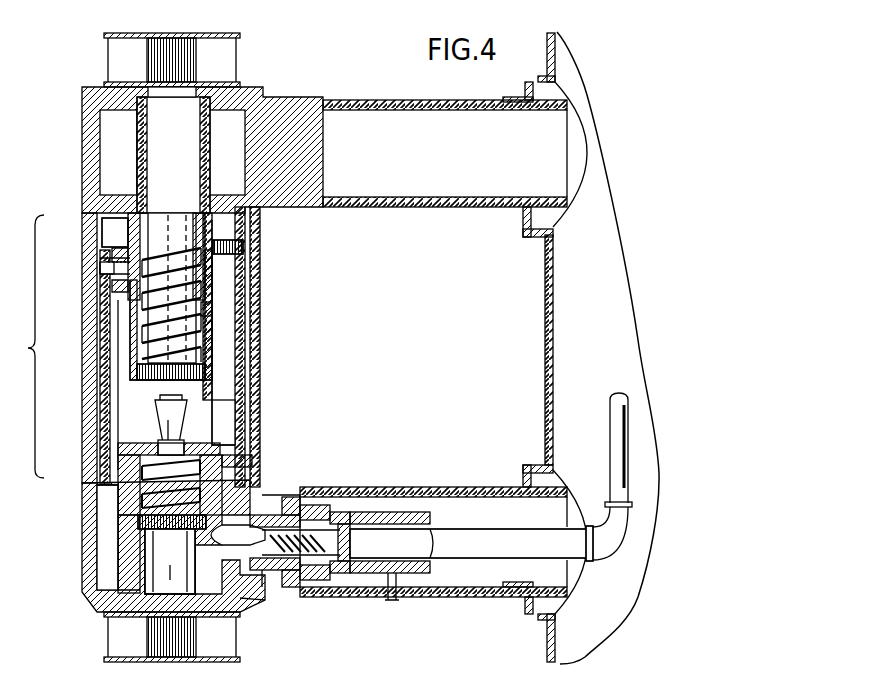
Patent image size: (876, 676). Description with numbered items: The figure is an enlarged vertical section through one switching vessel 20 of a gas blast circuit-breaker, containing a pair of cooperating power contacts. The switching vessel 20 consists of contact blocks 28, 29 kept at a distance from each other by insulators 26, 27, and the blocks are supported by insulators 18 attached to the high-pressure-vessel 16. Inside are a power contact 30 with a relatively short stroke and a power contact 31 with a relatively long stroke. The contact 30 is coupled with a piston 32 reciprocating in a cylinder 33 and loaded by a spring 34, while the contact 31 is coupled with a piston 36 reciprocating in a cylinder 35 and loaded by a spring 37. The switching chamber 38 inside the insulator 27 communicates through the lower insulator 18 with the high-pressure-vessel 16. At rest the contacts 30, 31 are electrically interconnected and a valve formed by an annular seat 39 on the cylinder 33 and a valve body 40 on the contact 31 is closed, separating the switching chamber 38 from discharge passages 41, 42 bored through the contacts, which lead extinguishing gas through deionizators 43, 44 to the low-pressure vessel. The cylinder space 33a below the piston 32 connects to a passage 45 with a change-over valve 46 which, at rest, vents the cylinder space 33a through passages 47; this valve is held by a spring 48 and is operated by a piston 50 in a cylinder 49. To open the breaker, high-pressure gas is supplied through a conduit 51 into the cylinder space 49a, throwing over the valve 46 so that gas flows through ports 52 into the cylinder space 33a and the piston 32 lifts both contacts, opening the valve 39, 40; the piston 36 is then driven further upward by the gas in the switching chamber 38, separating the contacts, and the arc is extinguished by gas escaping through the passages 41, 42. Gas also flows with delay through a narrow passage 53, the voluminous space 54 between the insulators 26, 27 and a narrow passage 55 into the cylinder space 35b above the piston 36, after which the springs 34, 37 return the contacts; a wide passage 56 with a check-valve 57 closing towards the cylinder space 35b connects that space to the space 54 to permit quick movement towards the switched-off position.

The high-pressure-vessel 16 is at (546, 362).
The insulator 18 is at (390, 100).
The switching vessel 20 is at (24, 346).
The insulator 26 is at (260, 393).
The insulator 27 is at (238, 403).
The contact block 28 is at (85, 566).
The contact block 29 is at (93, 158).
The power contact 30 is at (170, 561).
The power contact 31 is at (173, 420).
The piston 32 is at (137, 518).
The cylinder 33 is at (118, 483).
The cylinder space 33a is at (120, 540).
The spring 34 is at (118, 500).
The cylinder 35 is at (130, 329).
The cylinder space 35b is at (202, 346).
The piston 36 is at (188, 367).
The spring 37 is at (205, 322).
The switching chamber 38 is at (245, 412).
The annular seat 39 is at (120, 452).
The valve body 40 is at (135, 434).
The discharge passage 41 is at (160, 573).
The discharge passage 42 is at (173, 212).
The deionizator 43 is at (120, 638).
The deionizator 44 is at (207, 67).
The passage 45 is at (237, 613).
The change-over valve 46 is at (255, 567).
The passage 47 is at (288, 488).
The spring 48 is at (302, 522).
The cylinder 49 is at (382, 518).
The cylinder space 49a is at (338, 517).
The piston 50 is at (373, 515).
The conduit 51 is at (618, 430).
The port 52 is at (262, 510).
The narrow passage 53 is at (212, 441).
The space 54 is at (245, 300).
The narrow passage 55 is at (247, 240).
The wide passage 56 is at (100, 283).
The check-valve 57 is at (138, 265).